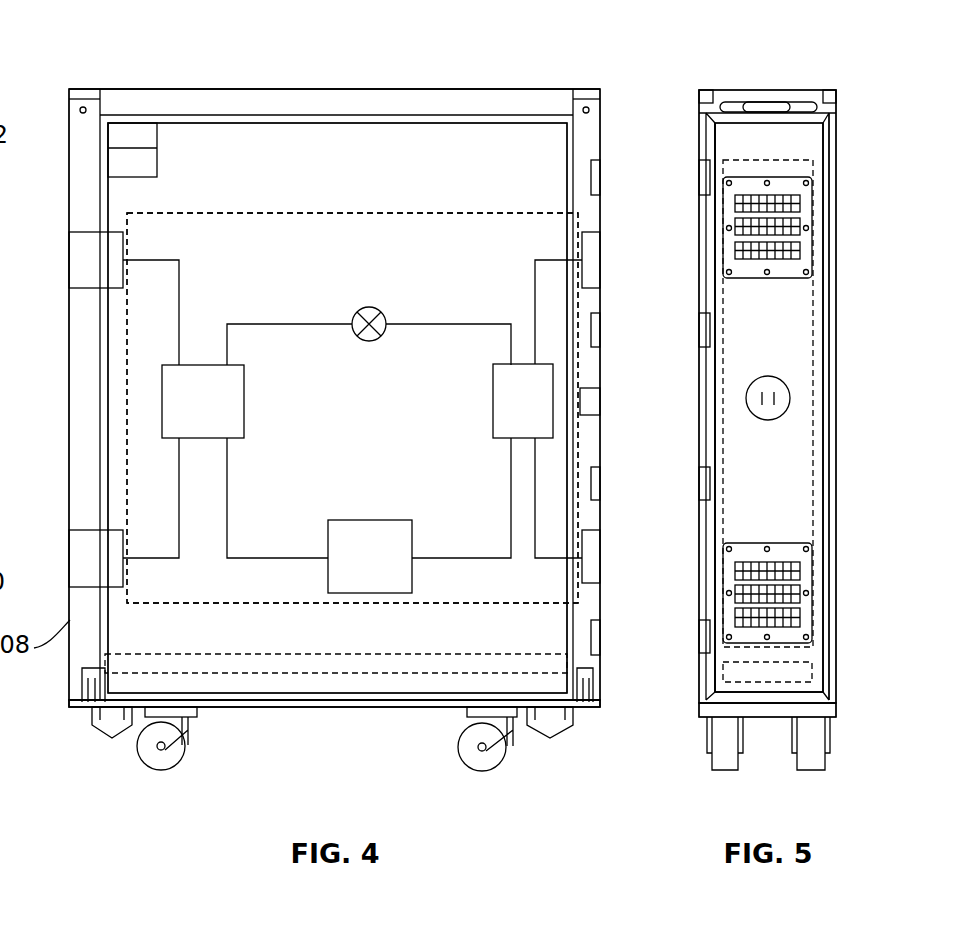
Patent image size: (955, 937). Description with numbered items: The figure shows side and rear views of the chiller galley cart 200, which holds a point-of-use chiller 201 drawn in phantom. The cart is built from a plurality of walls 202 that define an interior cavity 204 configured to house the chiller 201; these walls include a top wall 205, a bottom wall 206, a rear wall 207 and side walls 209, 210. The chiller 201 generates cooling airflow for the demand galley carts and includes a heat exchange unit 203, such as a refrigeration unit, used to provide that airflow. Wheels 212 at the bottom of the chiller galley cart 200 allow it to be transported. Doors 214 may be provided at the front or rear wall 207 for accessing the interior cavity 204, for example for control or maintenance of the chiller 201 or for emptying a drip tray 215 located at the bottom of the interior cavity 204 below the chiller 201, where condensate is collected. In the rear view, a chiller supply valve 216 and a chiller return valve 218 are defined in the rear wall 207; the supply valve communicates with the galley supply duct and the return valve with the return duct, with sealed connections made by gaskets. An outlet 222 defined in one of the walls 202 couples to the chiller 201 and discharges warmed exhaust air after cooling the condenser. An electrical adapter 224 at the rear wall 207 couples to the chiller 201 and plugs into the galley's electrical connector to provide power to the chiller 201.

In FIG. 4, the chiller galley cart 200 is at (415, 55).
In FIG. 5, the chiller galley cart 200 is at (828, 50).
In FIG. 4, the point-of-use chiller 201 is at (430, 213).
In FIG. 5, the point-of-use chiller 201 is at (815, 330).
In FIG. 4, the walls 202 is at (545, 89).
In FIG. 5, the walls 202 is at (828, 467).
In FIG. 4, the heat exchange unit 203 is at (285, 572).
In FIG. 4, the interior cavity 204 is at (320, 632).
In FIG. 5, the interior cavity 204 is at (802, 145).
In FIG. 4, the top wall 205 is at (338, 89).
In FIG. 5, the top wall 205 is at (775, 89).
In FIG. 4, the bottom wall 206 is at (335, 708).
In FIG. 5, the bottom wall 206 is at (768, 705).
In FIG. 4, the rear wall 207 is at (600, 605).
In FIG. 5, the rear wall 207 is at (782, 520).
In FIG. 5, the side wall 209 is at (832, 640).
In FIG. 4, the side wall 210 is at (125, 630).
In FIG. 5, the side wall 210 is at (702, 697).
In FIG. 4, the wheels 212 is at (160, 771).
In FIG. 5, the wheels 212 is at (818, 760).
In FIG. 5, the doors 214 is at (782, 445).
In FIG. 4, the drip tray 215 is at (373, 674).
In FIG. 5, the drip tray 215 is at (762, 672).
In FIG. 4, the chiller supply valve 216 is at (590, 262).
In FIG. 5, the chiller supply valve 216 is at (797, 228).
In FIG. 4, the chiller return valve 218 is at (590, 558).
In FIG. 5, the chiller return valve 218 is at (795, 595).
In FIG. 4, the outlet 222 is at (80, 263).
In FIG. 4, the electrical adapter 224 is at (592, 401).
In FIG. 5, the electrical adapter 224 is at (782, 398).